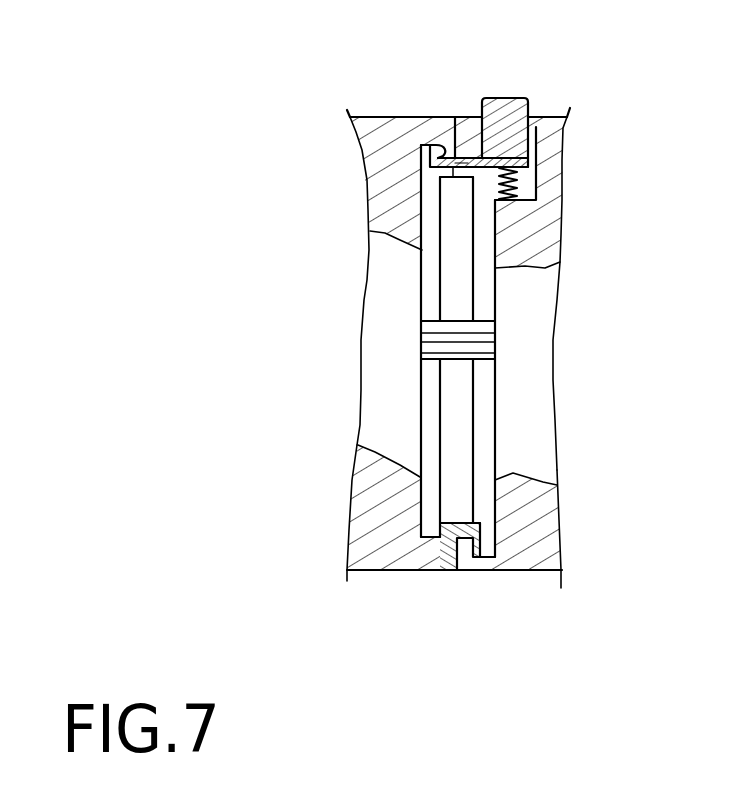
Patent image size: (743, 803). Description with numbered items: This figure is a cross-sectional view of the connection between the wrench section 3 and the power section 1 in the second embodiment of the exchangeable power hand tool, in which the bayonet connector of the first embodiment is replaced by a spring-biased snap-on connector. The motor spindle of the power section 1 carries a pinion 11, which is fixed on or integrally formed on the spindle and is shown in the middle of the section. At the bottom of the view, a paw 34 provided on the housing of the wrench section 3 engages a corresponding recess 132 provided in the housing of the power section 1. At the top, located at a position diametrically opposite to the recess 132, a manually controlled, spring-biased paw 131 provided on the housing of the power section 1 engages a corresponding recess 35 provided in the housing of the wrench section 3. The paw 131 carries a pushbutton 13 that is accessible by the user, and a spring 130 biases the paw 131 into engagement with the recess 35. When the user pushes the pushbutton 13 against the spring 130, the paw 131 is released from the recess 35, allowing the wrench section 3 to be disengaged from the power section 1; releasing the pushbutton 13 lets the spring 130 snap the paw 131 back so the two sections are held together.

The power section 1 is at (548, 527).
The wrench section 3 is at (388, 203).
The pinion 11 is at (483, 340).
The pushbutton 13 is at (507, 117).
The paw 34 is at (460, 532).
The recess 35 is at (423, 148).
The spring 130 is at (520, 180).
The paw 131 is at (460, 163).
The recess 132 is at (475, 554).